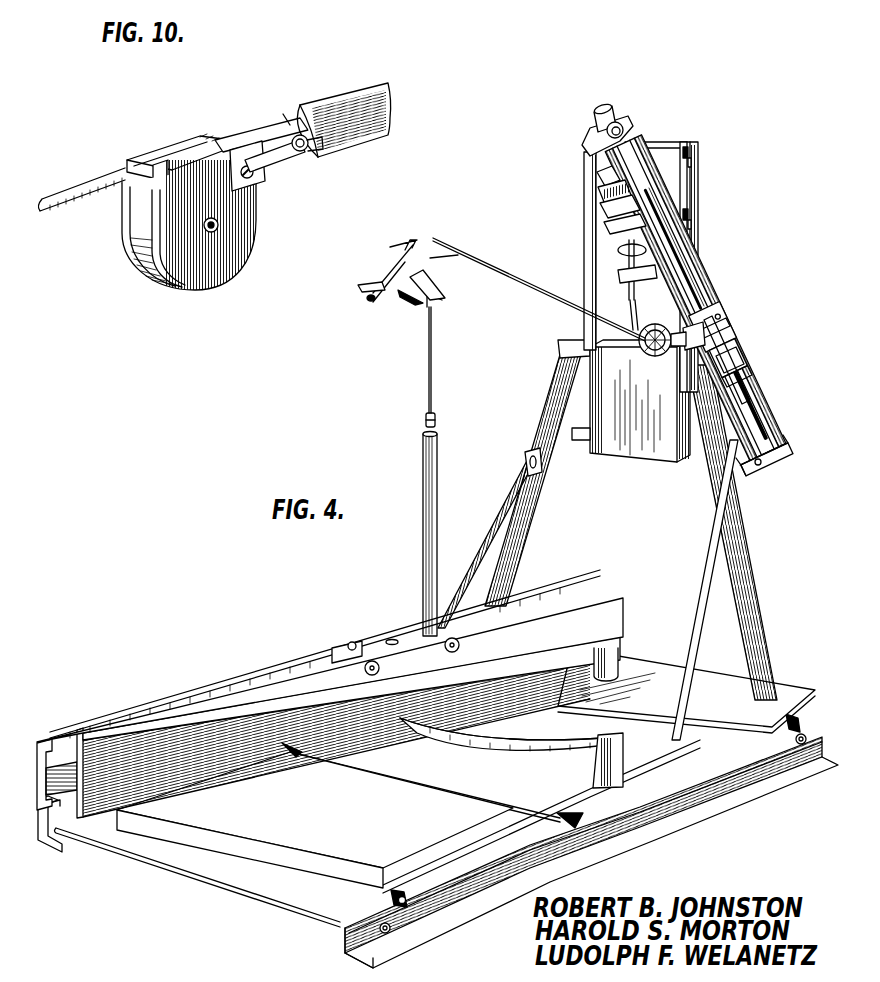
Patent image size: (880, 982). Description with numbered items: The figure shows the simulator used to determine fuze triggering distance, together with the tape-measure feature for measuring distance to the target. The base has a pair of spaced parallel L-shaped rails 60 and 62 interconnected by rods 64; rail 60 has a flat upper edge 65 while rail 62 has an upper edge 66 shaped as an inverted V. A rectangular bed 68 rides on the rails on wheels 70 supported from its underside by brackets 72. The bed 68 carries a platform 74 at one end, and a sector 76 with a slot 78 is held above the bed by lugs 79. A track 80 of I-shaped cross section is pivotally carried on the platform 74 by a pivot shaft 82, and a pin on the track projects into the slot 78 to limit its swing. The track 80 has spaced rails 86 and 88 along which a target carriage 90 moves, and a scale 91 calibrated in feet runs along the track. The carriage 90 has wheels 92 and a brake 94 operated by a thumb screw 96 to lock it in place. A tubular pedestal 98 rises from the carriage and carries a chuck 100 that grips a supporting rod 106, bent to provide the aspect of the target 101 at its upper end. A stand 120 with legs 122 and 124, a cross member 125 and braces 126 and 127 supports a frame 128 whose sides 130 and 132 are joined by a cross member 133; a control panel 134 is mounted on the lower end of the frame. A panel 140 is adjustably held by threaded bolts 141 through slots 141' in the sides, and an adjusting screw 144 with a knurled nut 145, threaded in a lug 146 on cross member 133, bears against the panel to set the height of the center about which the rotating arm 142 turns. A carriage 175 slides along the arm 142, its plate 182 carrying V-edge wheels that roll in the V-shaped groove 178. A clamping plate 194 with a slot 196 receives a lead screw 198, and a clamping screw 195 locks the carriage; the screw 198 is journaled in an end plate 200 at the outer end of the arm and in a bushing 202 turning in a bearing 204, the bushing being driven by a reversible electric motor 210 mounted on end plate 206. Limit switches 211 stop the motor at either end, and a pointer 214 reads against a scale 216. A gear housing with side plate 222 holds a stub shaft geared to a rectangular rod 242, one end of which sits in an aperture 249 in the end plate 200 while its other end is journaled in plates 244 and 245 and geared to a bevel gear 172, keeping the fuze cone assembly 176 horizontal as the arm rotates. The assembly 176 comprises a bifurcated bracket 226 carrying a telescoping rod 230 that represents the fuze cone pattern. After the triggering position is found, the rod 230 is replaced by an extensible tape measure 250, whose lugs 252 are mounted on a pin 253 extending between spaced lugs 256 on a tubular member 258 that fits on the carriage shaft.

In FIG. 10, the extensible tape measure 250 is at (173, 153).
In FIG. 10, the lugs 252 is at (290, 163).
In FIG. 10, the pin 253 is at (303, 152).
In FIG. 10, the spaced lugs 256 is at (322, 150).
In FIG. 10, the tubular member 258 is at (343, 93).
In FIG. 4, the L-shaped rail 60 is at (700, 812).
In FIG. 4, the L-shaped rail 62 is at (72, 842).
In FIG. 4, the rods 64 is at (414, 784).
In FIG. 4, the flat upper edge 65 is at (342, 925).
In FIG. 4, the upper edge 66 is at (58, 806).
In FIG. 4, the rectangular bed 68 is at (292, 848).
In FIG. 4, the wheels 70 is at (794, 737).
In FIG. 4, the brackets 72 is at (390, 900).
In FIG. 4, the platform 74 is at (708, 670).
In FIG. 4, the sector 76 is at (500, 733).
In FIG. 4, the slot 78 is at (456, 734).
In FIG. 4, the lugs 79 is at (598, 755).
In FIG. 4, the track 80 is at (290, 748).
In FIG. 4, the pivot shaft 82 is at (614, 668).
In FIG. 4, the rail 86 is at (100, 740).
In FIG. 4, the rail 88 is at (197, 744).
In FIG. 4, the target carriage 90 is at (400, 637).
In FIG. 4, the scale 91 is at (180, 700).
In FIG. 4, the wheels 92 is at (450, 652).
In FIG. 4, the brake 94 is at (338, 650).
In FIG. 4, the thumb screw 96 is at (356, 643).
In FIG. 4, the tubular pedestal 98 is at (438, 477).
In FIG. 4, the chuck 100 is at (435, 418).
In FIG. 4, the target 101 is at (397, 276).
In FIG. 4, the supporting rod 106 is at (432, 346).
In FIG. 4, the stand 120 is at (528, 457).
In FIG. 4, the leg 122 is at (538, 540).
In FIG. 4, the leg 124 is at (770, 670).
In FIG. 4, the cross member 125 is at (578, 444).
In FIG. 4, the brace 126 is at (495, 516).
In FIG. 4, the brace 127 is at (708, 538).
In FIG. 4, the frame 128 is at (575, 226).
In FIG. 4, the side 130 is at (584, 170).
In FIG. 4, the side 132 is at (698, 192).
In FIG. 4, the cross member 133 is at (625, 260).
In FIG. 4, the control panel 134 is at (641, 415).
In FIG. 4, the panel 140 is at (673, 165).
In FIG. 4, the threaded bolts 141 is at (710, 182).
In FIG. 4, the slots 141' is at (716, 197).
In FIG. 4, the rotating arm 142 is at (688, 285).
In FIG. 4, the adjusting screw 144 is at (618, 272).
In FIG. 4, the knurled nut 145 is at (618, 247).
In FIG. 4, the lug 146 is at (626, 282).
In FIG. 4, the bevel gear 172 is at (600, 195).
In FIG. 4, the carriage 175 is at (688, 305).
In FIG. 4, the fuze cone assembly 176 is at (645, 366).
In FIG. 4, the V-shaped groove 178 is at (755, 377).
In FIG. 4, the plate 182 is at (700, 303).
In FIG. 4, the clamping plate 194 is at (720, 312).
In FIG. 4, the clamping screw 195 is at (724, 318).
In FIG. 4, the slot 196 is at (732, 328).
In FIG. 4, the lead screw 198 is at (740, 346).
In FIG. 4, the end plate 200 is at (792, 428).
In FIG. 4, the bushing 202 is at (622, 136).
In FIG. 4, the bearing 204 is at (623, 128).
In FIG. 4, the end plate 206 is at (624, 116).
In FIG. 4, the reversible electric motor 210 is at (607, 105).
In FIG. 4, the limit switches 211 is at (785, 460).
In FIG. 4, the pointer 214 is at (745, 360).
In FIG. 4, the scale 216 is at (766, 394).
In FIG. 4, the side plate 222 is at (670, 330).
In FIG. 4, the bifurcated bracket 226 is at (672, 355).
In FIG. 4, the telescoping rod 230 is at (540, 286).
In FIG. 4, the rod 242 is at (608, 226).
In FIG. 4, the plate 244 is at (604, 210).
In FIG. 4, the plate 245 is at (600, 180).
In FIG. 4, the aperture 249 is at (758, 466).